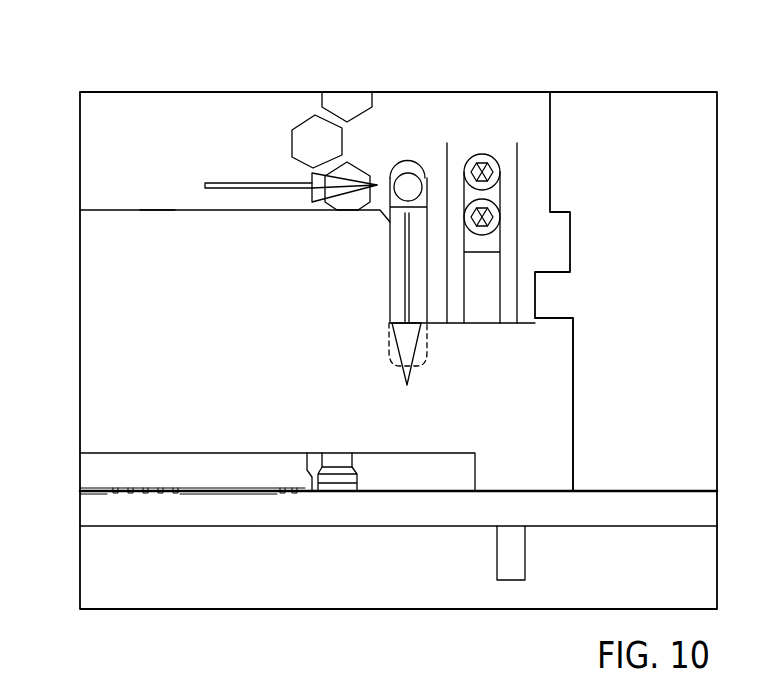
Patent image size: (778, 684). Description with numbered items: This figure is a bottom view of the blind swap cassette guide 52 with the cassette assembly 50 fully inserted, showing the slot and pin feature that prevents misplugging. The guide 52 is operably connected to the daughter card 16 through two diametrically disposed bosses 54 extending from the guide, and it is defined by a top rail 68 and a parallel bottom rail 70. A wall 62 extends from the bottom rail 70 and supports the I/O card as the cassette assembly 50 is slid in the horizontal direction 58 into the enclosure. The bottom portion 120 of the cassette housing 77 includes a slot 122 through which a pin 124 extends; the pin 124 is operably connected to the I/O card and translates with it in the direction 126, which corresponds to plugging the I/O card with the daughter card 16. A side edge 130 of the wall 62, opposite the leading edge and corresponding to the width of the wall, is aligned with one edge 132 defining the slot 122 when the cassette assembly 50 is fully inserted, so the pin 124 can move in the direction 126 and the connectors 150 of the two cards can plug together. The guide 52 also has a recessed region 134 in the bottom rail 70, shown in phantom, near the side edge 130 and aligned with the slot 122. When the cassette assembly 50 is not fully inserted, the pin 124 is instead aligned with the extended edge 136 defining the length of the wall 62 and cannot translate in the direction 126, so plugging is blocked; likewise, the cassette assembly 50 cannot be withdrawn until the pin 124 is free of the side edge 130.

The daughter card 16 is at (707, 508).
The cassette assembly 50 is at (537, 105).
The blind swap cassette guide 52 is at (79, 359).
The boss 54 is at (508, 567).
The horizontal direction 58 is at (232, 183).
The wall 62 is at (98, 245).
The top rail 68 is at (335, 478).
The bottom rail 70 is at (557, 398).
The cassette housing 77 is at (213, 122).
The bottom portion 120 is at (100, 160).
The slot 122 is at (428, 208).
The pin 124 is at (409, 187).
The direction 126 is at (403, 255).
The side edge 130 is at (390, 280).
The edge 132 is at (405, 188).
The recessed region 134 is at (427, 355).
The extended edge 136 is at (157, 210).
The connectors 150 is at (107, 493).